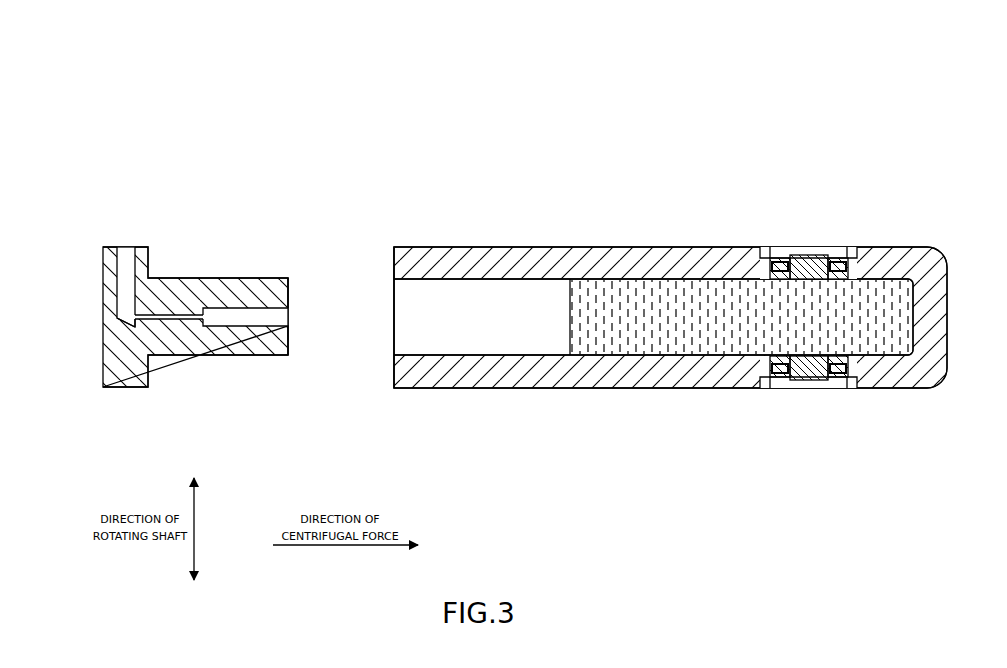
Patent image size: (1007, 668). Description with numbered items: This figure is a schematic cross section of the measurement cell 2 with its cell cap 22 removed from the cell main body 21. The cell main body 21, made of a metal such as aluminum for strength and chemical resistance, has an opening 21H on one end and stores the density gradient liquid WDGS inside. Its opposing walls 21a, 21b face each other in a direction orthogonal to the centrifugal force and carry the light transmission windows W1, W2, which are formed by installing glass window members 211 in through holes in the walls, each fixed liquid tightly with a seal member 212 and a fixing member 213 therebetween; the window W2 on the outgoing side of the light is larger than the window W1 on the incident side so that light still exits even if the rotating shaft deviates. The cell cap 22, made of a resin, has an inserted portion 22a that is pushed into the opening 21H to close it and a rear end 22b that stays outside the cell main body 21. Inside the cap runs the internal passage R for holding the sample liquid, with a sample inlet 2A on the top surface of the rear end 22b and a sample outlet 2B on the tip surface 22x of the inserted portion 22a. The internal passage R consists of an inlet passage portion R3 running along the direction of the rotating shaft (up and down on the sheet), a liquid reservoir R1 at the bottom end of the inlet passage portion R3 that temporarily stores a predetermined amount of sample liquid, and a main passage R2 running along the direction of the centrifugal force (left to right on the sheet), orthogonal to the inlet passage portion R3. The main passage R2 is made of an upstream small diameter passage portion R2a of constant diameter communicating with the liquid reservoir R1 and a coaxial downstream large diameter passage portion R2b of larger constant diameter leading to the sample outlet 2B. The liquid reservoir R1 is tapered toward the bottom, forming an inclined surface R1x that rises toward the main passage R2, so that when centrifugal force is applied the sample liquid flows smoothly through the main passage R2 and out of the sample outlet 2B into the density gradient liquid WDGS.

The measurement cell 2 is at (279, 92).
The sample inlet 2A is at (125, 245).
The sample outlet 2B is at (291, 318).
The cell main body 21 is at (506, 247).
The opening 21H is at (392, 286).
The opposing wall 21a is at (678, 388).
The opposing wall 21b is at (678, 247).
The window member 211 is at (786, 262).
The seal member 212 is at (850, 268).
The fixing member 213 is at (843, 255).
The cell cap 22 is at (245, 230).
The inserted portion 22a is at (226, 278).
The rear end 22b is at (150, 262).
The tip surface 22x is at (290, 296).
The internal passage R is at (123, 304).
The liquid reservoir R1 is at (133, 328).
The inclined surface R1x is at (120, 324).
The main passage R2 is at (211, 364).
The small diameter passage portion R2a is at (180, 320).
The large diameter passage portion R2b is at (247, 326).
The inlet passage portion R3 is at (110, 272).
The light transmission window W1 is at (806, 380).
The light transmission window W2 is at (808, 258).
The density gradient liquid WDGS is at (586, 290).